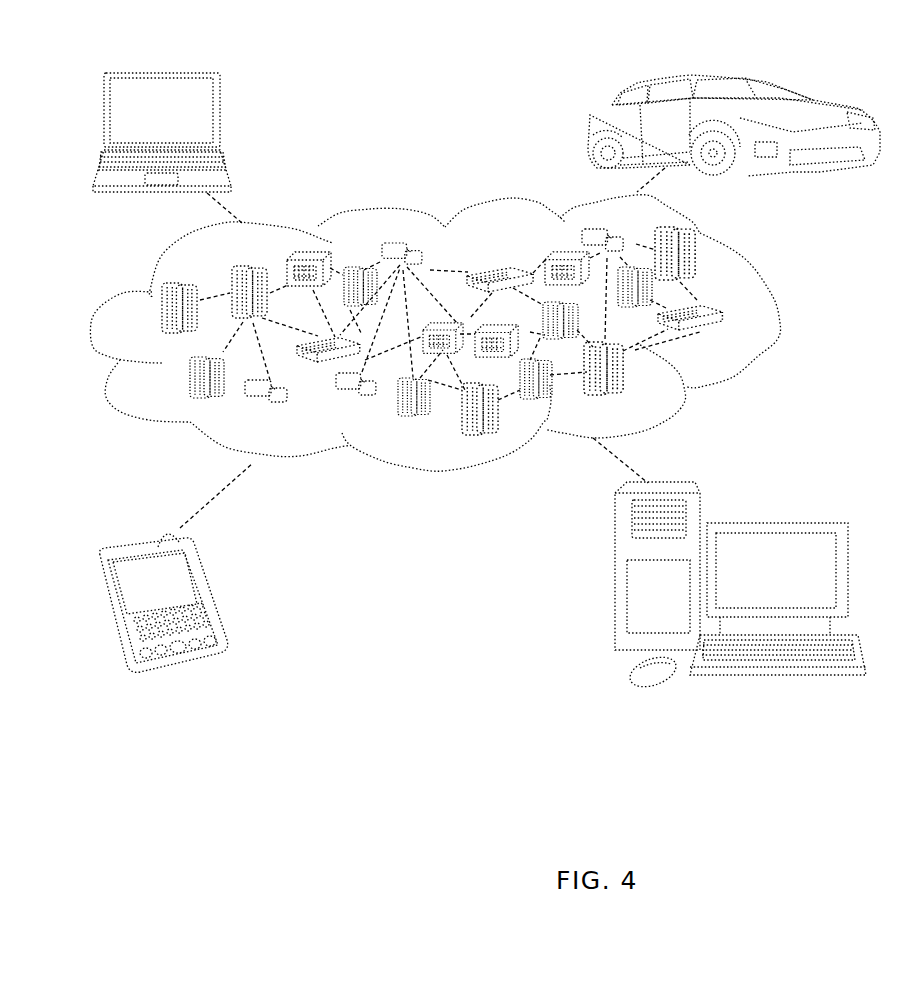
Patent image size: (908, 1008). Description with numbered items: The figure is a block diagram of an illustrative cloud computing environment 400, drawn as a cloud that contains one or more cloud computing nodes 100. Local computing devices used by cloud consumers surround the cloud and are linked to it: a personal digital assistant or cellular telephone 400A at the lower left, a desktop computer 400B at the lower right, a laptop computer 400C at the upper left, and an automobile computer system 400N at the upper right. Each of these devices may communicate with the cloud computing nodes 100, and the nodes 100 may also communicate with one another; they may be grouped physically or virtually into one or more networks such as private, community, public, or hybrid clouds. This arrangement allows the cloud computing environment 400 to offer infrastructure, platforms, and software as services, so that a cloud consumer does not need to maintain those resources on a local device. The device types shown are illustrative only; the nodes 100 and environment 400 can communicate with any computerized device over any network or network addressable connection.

The cloud computing environment 400 is at (785, 311).
The cloud computing nodes 100 is at (722, 334).
The personal digital assistant (PDA) or cellular telephone 400A is at (212, 594).
The desktop computer 400B is at (776, 521).
The laptop computer 400C is at (230, 113).
The automobile computer system 400N is at (590, 132).